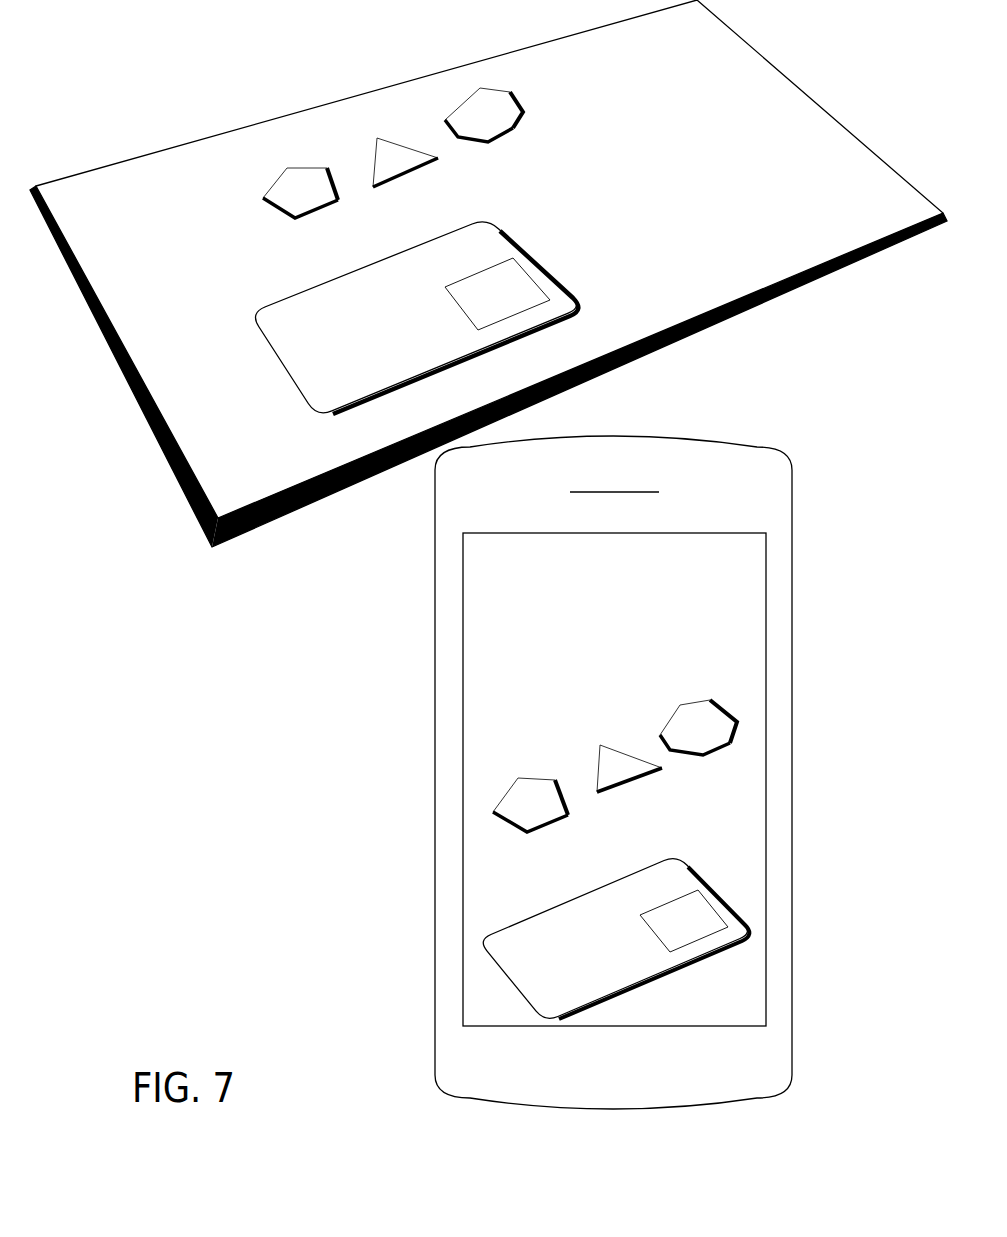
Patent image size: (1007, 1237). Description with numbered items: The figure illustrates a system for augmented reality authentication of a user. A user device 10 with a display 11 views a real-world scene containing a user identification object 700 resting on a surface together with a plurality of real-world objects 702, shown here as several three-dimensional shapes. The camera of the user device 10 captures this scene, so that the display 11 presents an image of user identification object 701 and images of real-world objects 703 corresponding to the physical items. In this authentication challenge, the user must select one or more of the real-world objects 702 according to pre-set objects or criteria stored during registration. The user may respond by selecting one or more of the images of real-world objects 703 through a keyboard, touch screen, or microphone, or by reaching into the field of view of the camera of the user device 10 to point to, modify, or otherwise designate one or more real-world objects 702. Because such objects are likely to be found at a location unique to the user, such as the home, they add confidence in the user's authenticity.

The user device 10 is at (803, 556).
The display 11 is at (763, 838).
The user identification object 700 is at (372, 416).
The image of user identification object 701 is at (483, 965).
The real-world objects 702 is at (303, 242).
The images of real-world objects 703 is at (488, 834).